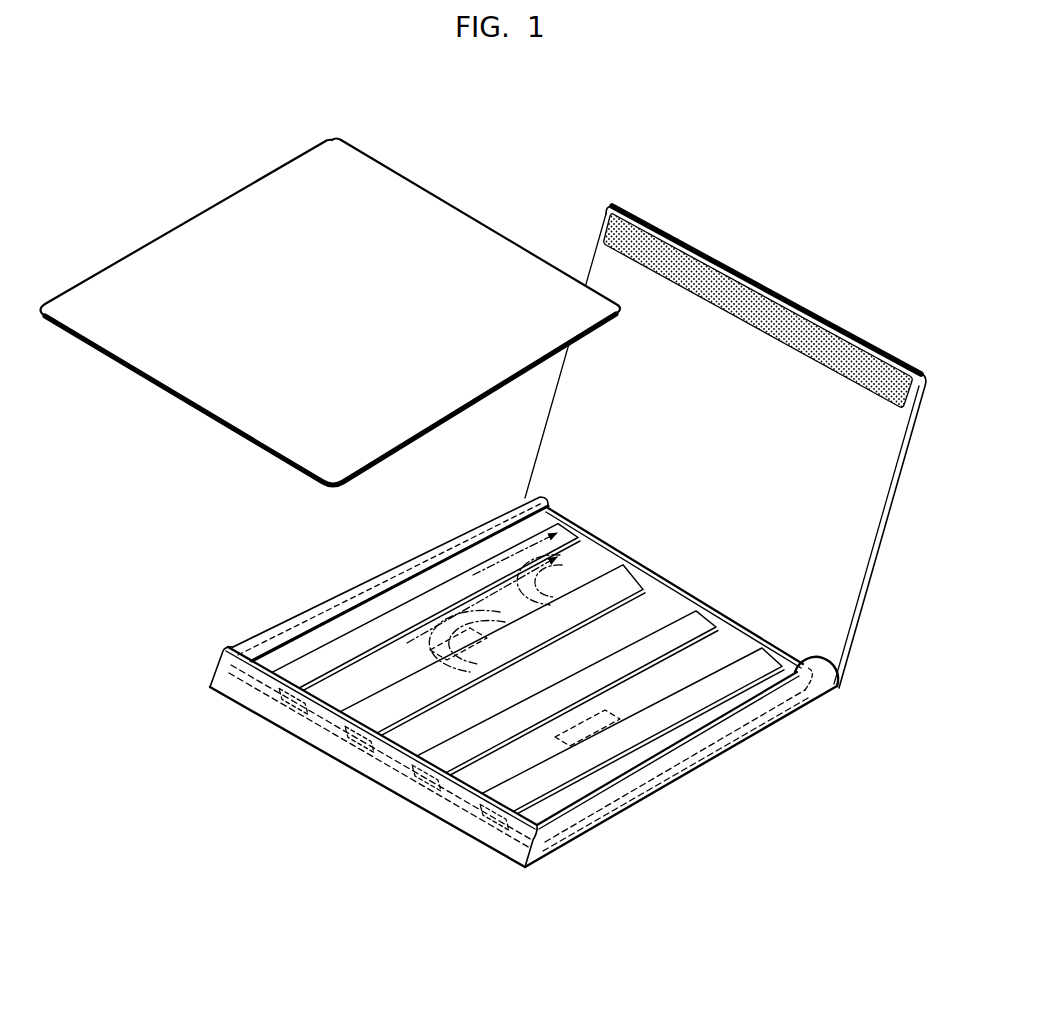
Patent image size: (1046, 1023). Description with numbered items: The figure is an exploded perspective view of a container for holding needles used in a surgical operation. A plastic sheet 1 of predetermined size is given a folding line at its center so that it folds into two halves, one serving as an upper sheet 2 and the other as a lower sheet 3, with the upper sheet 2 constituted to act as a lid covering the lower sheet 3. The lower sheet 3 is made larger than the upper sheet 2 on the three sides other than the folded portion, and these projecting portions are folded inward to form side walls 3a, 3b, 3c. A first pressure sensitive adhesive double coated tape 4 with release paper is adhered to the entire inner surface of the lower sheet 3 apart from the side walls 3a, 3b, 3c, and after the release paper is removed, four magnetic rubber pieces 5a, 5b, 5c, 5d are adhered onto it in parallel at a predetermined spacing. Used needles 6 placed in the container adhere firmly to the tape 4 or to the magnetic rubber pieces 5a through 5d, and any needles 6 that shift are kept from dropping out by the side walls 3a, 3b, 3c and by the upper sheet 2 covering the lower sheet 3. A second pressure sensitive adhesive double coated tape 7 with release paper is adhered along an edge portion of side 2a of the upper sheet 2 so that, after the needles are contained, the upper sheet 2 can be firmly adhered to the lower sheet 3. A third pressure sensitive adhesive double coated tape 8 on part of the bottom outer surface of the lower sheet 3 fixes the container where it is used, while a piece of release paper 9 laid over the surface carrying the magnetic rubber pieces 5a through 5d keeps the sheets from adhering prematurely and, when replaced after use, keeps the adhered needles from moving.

The plastic sheet 1 is at (856, 688).
The upper sheet 2 is at (725, 439).
The side 2a is at (776, 292).
The lower sheet 3 is at (524, 672).
The side wall 3a is at (607, 795).
The side wall 3b is at (323, 722).
The side wall 3c is at (345, 607).
The first pressure sensitive adhesive double coated tape 4 is at (530, 766).
The magnetic rubber piece 5a is at (735, 668).
The magnetic rubber piece 5b is at (680, 622).
The magnetic rubber piece 5c is at (635, 585).
The magnetic rubber piece 5d is at (453, 607).
The needles 6 is at (560, 530).
The second pressure sensitive adhesive double coated tape 7 is at (722, 290).
The third pressure sensitive adhesive double coated tape 8 is at (634, 718).
The release paper 9 is at (206, 232).